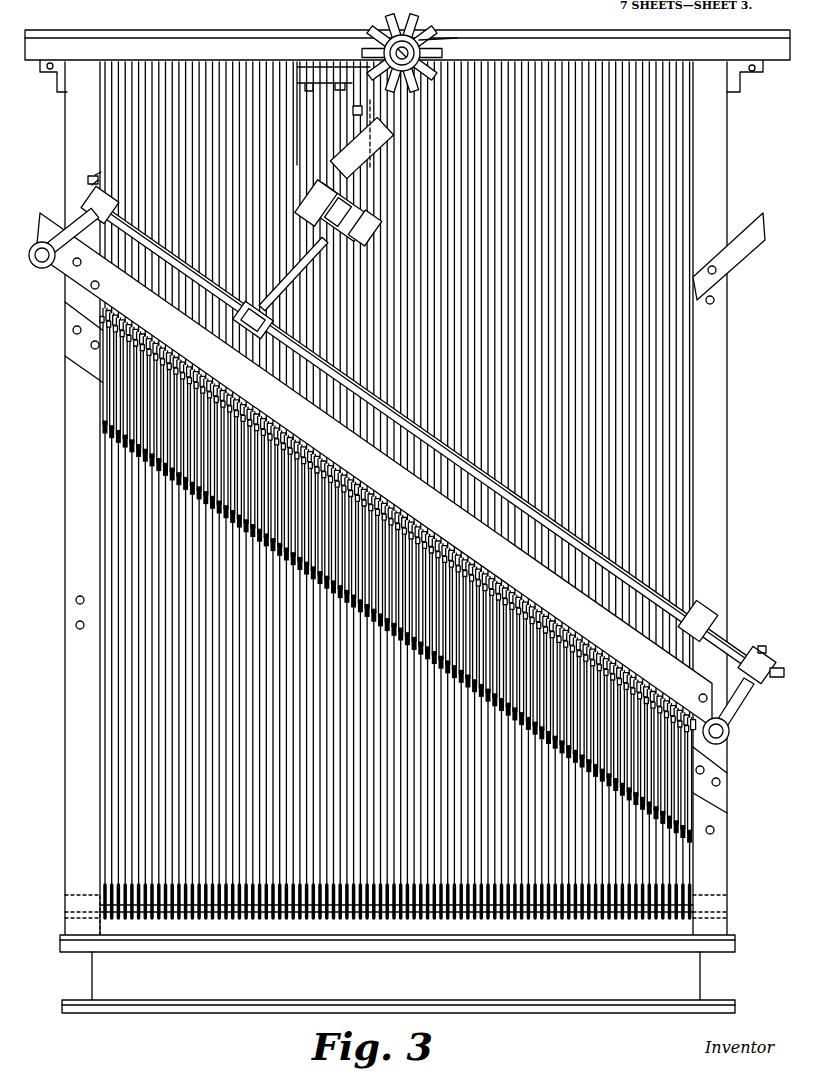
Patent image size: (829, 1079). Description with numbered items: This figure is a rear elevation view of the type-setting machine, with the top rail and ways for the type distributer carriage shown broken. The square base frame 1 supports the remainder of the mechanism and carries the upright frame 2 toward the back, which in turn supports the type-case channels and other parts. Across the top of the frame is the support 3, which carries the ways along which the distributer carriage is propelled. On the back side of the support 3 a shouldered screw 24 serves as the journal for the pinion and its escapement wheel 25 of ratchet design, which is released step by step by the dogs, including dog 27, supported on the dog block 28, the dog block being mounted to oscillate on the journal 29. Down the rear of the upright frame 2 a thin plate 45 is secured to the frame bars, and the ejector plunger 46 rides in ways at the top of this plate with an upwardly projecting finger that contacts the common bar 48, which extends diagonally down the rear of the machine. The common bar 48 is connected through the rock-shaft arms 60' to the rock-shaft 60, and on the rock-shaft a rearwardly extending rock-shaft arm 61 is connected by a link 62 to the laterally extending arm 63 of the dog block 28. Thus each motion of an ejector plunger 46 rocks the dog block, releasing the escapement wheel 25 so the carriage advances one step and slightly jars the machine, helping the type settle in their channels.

The base frame 1 is at (175, 993).
The upright frame 2 is at (72, 478).
The support 3 is at (90, 47).
The shouldered screw 24 is at (392, 52).
The escapement wheel 25 is at (457, 38).
The dog 27 is at (353, 112).
The dog block 28 is at (372, 155).
The journal 29 is at (374, 234).
The thin plate 45 is at (108, 345).
The ejector plunger 46 is at (108, 330).
The common bar 48 is at (70, 280).
The rock-shaft 60 is at (758, 639).
The rock-shaft arm 60' is at (406, 457).
The rock-shaft arm 61 is at (374, 470).
The link 62 is at (290, 280).
The arm 63 is at (333, 203).